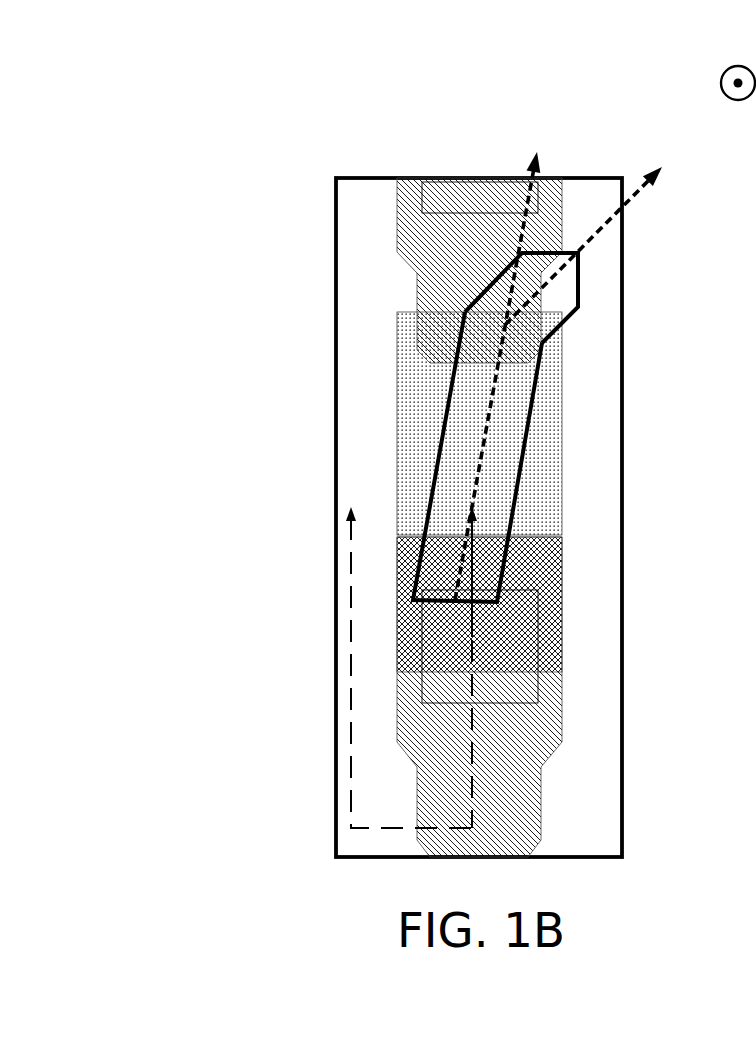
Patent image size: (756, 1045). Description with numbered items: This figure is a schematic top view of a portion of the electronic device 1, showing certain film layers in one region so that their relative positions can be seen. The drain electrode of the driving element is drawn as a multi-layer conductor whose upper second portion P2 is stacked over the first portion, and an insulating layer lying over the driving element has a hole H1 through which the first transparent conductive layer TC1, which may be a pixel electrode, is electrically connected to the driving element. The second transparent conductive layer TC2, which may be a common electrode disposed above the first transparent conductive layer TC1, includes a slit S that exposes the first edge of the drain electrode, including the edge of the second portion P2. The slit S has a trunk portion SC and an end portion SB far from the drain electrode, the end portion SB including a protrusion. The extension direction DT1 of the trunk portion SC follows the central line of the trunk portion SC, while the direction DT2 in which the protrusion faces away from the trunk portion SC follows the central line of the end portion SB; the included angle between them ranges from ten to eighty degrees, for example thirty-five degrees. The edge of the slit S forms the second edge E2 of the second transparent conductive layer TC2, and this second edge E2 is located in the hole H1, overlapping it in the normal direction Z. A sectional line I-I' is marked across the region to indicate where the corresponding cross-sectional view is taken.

The electronic device 1 is at (706, 909).
The normal direction Z is at (738, 64).
The second portion P2 is at (397, 200).
The hole H1 is at (409, 178).
The first transparent conductive layer TC1 is at (397, 420).
The second transparent conductive layer TC2 is at (336, 365).
The second edge E2 is at (480, 605).
The end portion SB is at (582, 293).
The trunk portion SC is at (530, 422).
The slit S is at (707, 347).
The extension direction of trunk portion DT1 is at (505, 364).
The direction in which protrusion faces away DT2 is at (595, 235).
The sectional line end I' is at (479, 658).
The sectional line I is at (409, 654).